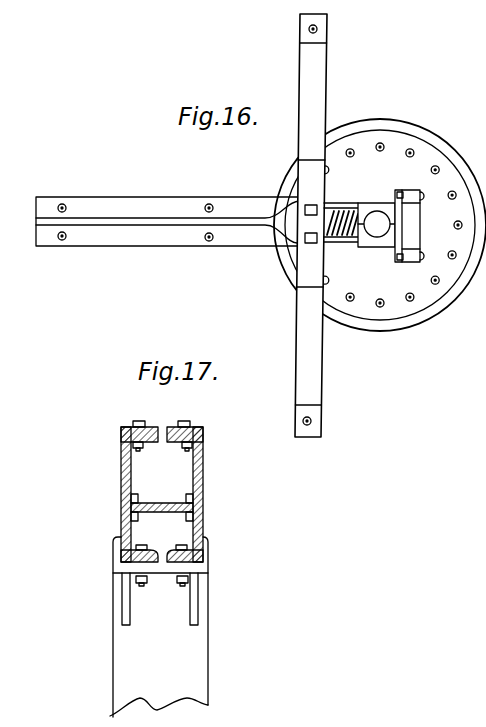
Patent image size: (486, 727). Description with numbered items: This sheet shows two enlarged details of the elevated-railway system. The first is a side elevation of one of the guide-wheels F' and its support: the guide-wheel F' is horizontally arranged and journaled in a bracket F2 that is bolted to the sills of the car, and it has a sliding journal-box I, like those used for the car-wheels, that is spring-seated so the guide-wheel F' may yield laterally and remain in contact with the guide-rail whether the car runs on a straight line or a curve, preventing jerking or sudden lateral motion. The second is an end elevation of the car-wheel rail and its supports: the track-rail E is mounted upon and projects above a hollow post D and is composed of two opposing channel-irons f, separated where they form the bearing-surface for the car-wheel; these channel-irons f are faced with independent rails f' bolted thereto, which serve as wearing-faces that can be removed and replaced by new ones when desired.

In FIG. 16, the guide-wheel F' is at (380, 225).
In FIG. 16, the bracket F2 is at (263, 236).
In FIG. 16, the journal-box I is at (373, 206).
In FIG. 17, the track-rail E is at (160, 480).
In FIG. 17, the channel-iron f is at (160, 494).
In FIG. 17, the independent rail f' is at (162, 420).
In FIG. 17, the post D is at (153, 651).